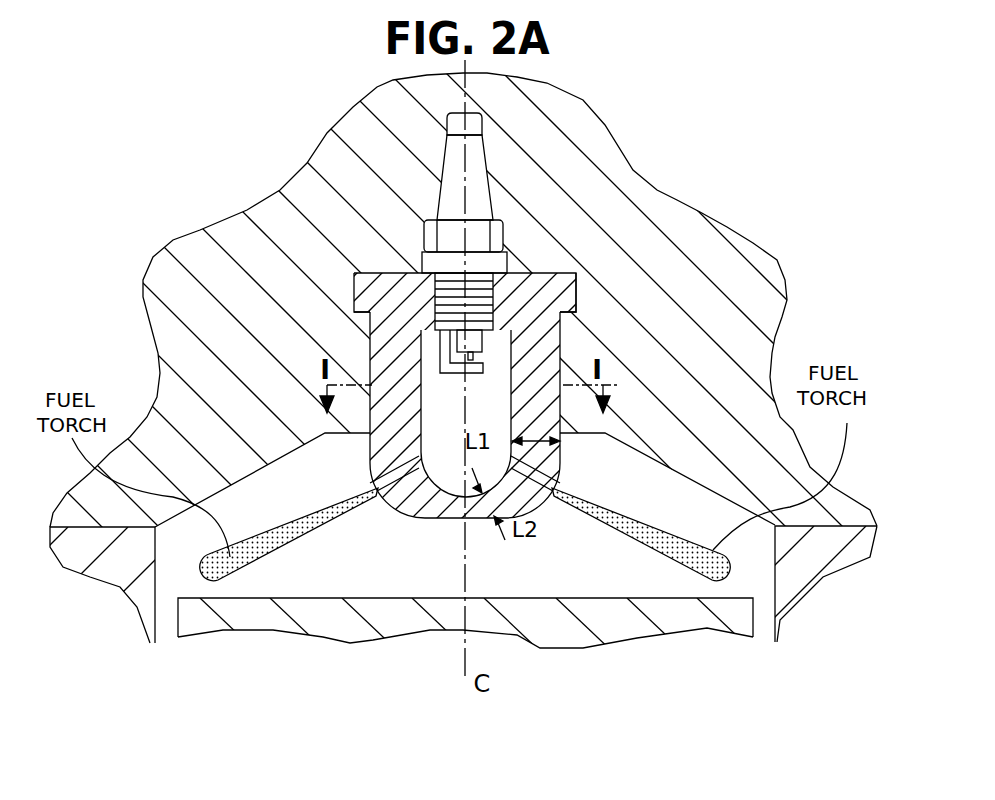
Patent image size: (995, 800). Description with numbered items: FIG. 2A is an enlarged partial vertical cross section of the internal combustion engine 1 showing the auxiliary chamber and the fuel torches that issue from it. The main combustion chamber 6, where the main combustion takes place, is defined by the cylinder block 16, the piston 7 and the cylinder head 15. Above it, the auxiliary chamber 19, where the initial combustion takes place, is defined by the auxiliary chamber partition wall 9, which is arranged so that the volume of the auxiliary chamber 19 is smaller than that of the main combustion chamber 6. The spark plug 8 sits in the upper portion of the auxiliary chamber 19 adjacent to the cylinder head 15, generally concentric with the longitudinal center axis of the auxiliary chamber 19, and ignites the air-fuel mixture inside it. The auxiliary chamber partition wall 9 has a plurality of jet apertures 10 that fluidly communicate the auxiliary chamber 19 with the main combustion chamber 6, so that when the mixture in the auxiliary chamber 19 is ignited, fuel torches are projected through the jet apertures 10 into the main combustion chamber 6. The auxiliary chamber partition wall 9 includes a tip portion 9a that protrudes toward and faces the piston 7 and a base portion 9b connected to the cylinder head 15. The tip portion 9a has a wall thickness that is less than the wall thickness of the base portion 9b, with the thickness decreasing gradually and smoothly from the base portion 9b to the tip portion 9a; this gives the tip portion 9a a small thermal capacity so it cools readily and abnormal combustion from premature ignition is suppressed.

The internal combustion engine 1 is at (716, 195).
The main combustion chamber 6 is at (539, 590).
The piston 7 is at (248, 615).
The spark plug 8 is at (487, 162).
The auxiliary chamber partition wall 9 is at (413, 512).
The tip portion 9a is at (458, 515).
The base portion 9b is at (370, 432).
The jet apertures 10 is at (372, 471).
The cylinder head 15 is at (718, 372).
The cylinder block 16 is at (820, 580).
The auxiliary chamber 19 is at (493, 395).